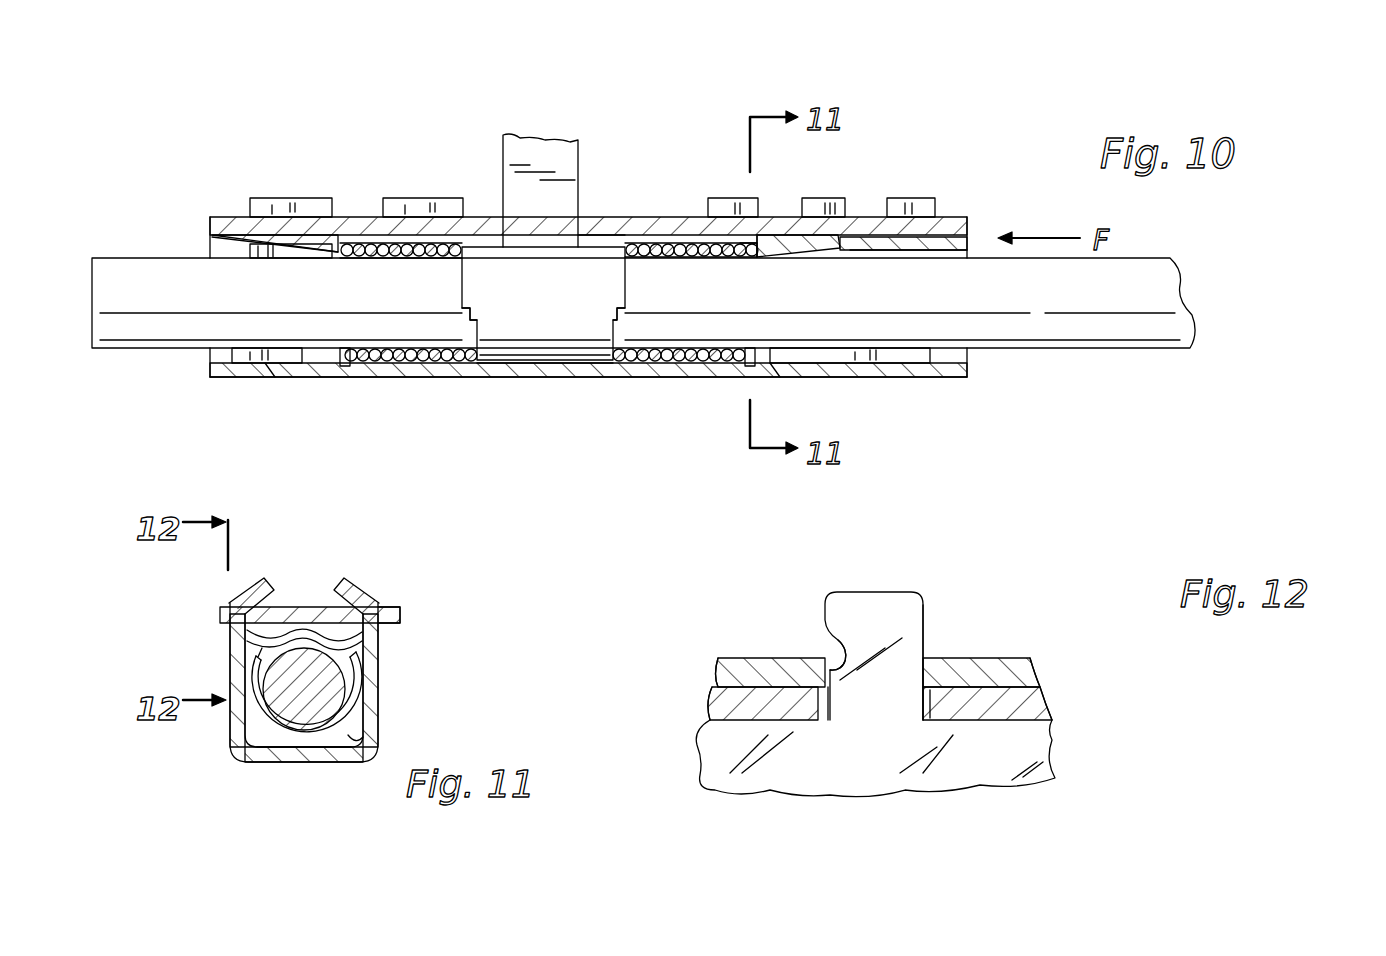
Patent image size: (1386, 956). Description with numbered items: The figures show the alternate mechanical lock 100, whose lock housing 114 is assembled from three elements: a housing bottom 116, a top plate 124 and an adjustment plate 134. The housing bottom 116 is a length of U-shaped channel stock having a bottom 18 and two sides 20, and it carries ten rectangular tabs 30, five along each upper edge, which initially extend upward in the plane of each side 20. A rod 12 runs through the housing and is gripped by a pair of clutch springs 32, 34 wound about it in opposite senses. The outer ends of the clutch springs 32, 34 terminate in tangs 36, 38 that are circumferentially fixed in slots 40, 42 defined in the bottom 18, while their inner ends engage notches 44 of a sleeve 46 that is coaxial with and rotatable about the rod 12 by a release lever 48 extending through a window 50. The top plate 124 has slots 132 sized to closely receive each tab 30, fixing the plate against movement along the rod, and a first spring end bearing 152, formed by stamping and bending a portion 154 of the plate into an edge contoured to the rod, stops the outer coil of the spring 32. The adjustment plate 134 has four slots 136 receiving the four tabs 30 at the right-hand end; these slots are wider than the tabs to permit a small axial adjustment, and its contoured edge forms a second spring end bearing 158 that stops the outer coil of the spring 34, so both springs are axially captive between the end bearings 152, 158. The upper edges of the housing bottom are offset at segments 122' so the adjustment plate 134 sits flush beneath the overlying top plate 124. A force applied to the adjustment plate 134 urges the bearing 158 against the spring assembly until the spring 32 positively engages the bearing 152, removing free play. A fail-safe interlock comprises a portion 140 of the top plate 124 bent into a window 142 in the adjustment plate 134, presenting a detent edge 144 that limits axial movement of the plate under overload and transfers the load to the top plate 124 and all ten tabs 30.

In FIG. 10, the mechanical lock 100 is at (598, 128).
In FIG. 10, the rod 12 is at (1040, 315).
In FIG. 11, the rod 12 is at (288, 718).
In FIG. 10, the bottom 18 is at (587, 367).
In FIG. 11, the bottom 18 is at (317, 765).
In FIG. 11, the sides 20 is at (378, 688).
In FIG. 12, the sides 20 is at (872, 757).
In FIG. 10, the tabs 30 is at (255, 200).
In FIG. 11, the tabs 30 is at (247, 593).
In FIG. 12, the tabs 30 is at (893, 640).
In FIG. 10, the clutch spring 32 is at (385, 243).
In FIG. 10, the clutch spring 34 is at (642, 245).
In FIG. 11, the clutch spring 34 is at (348, 735).
In FIG. 10, the tang 36 is at (335, 366).
In FIG. 10, the tang 38 is at (737, 370).
In FIG. 10, the slot 40 is at (295, 376).
In FIG. 10, the slot 42 is at (775, 375).
In FIG. 10, the notches 44 is at (475, 322).
In FIG. 10, the sleeve 46 is at (533, 330).
In FIG. 10, the release lever 48 is at (503, 180).
In FIG. 10, the window 50 is at (588, 218).
In FIG. 10, the lock housing 114 is at (410, 375).
In FIG. 11, the housing bottom 116 is at (267, 762).
In FIG. 12, the offset segments 122' is at (921, 695).
In FIG. 10, the top plate 124 is at (780, 220).
In FIG. 11, the top plate 124 is at (222, 616).
In FIG. 12, the top plate 124 is at (1030, 660).
In FIG. 12, the slots 132 is at (828, 645).
In FIG. 10, the adjustment plate 134 is at (968, 235).
In FIG. 11, the adjustment plate 134 is at (390, 633).
In FIG. 12, the adjustment plate 134 is at (1037, 692).
In FIG. 12, the slots 136 is at (918, 718).
In FIG. 10, the portion 140 is at (858, 240).
In FIG. 10, the window 142 is at (893, 255).
In FIG. 10, the detent edge 144 is at (853, 252).
In FIG. 10, the first spring end bearing 152 is at (345, 235).
In FIG. 10, the portion 154 is at (310, 230).
In FIG. 10, the second spring end bearing 158 is at (735, 252).
In FIG. 11, the second spring end bearing 158 is at (305, 633).